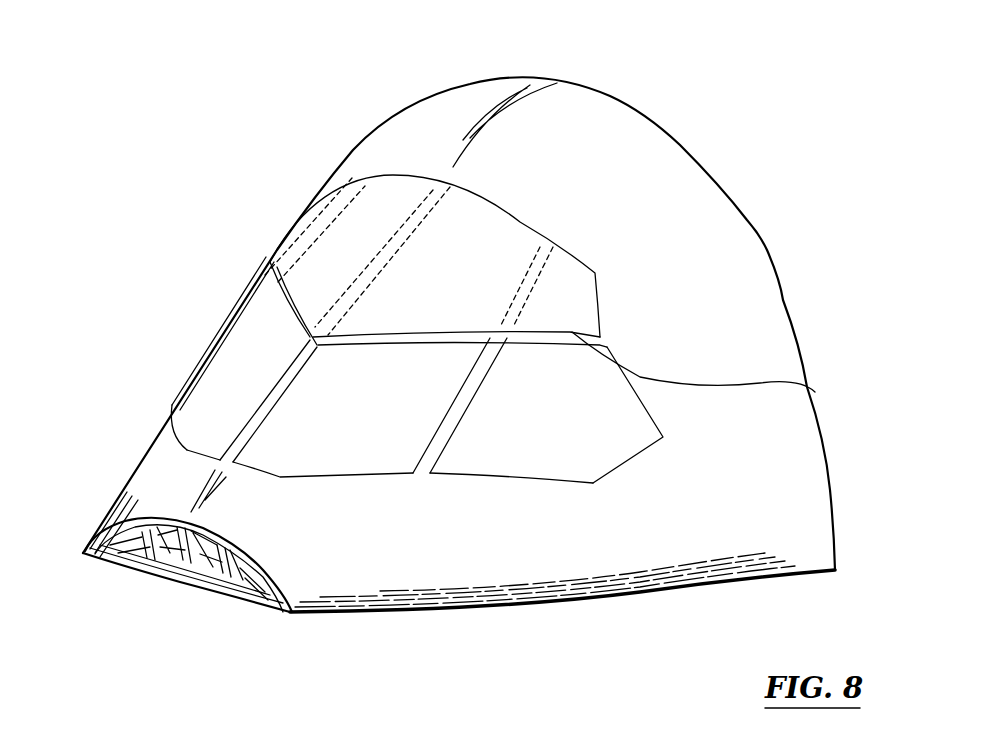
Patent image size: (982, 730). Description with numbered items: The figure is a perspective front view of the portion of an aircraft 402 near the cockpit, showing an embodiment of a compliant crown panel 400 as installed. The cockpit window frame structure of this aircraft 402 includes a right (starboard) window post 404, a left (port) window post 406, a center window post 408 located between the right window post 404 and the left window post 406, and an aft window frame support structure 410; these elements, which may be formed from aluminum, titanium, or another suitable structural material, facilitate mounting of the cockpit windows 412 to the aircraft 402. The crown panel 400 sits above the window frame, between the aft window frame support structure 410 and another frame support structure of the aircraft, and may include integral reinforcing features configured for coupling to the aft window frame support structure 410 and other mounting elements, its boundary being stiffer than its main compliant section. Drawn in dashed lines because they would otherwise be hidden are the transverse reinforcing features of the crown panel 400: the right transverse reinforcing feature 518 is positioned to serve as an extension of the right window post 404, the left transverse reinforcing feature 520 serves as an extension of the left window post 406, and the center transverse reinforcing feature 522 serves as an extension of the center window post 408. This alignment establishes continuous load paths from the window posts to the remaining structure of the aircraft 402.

The compliant crown panel 400 is at (368, 219).
The aircraft 402 is at (768, 160).
The right window post 404 is at (223, 338).
The left window post 406 is at (453, 422).
The center window post 408 is at (253, 423).
The aft window frame support structure 410 is at (815, 392).
The cockpit windows 412 is at (252, 400).
The right transverse reinforcing feature 518 is at (307, 227).
The left transverse reinforcing feature 520 is at (545, 250).
The center transverse reinforcing feature 522 is at (432, 187).